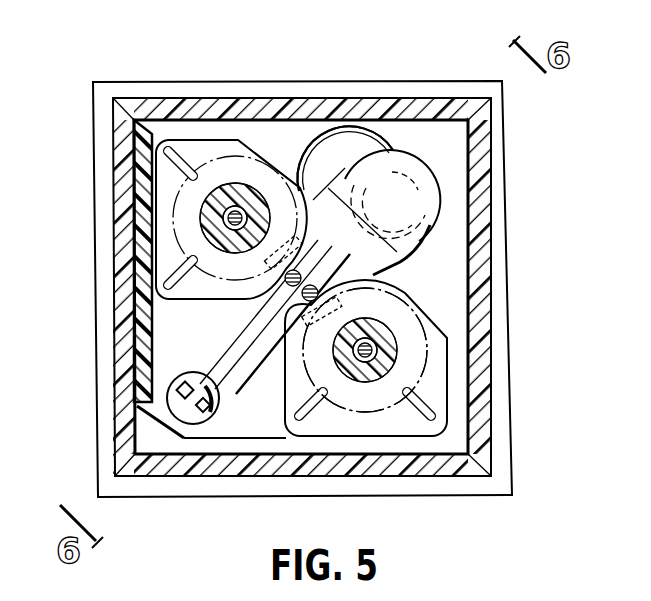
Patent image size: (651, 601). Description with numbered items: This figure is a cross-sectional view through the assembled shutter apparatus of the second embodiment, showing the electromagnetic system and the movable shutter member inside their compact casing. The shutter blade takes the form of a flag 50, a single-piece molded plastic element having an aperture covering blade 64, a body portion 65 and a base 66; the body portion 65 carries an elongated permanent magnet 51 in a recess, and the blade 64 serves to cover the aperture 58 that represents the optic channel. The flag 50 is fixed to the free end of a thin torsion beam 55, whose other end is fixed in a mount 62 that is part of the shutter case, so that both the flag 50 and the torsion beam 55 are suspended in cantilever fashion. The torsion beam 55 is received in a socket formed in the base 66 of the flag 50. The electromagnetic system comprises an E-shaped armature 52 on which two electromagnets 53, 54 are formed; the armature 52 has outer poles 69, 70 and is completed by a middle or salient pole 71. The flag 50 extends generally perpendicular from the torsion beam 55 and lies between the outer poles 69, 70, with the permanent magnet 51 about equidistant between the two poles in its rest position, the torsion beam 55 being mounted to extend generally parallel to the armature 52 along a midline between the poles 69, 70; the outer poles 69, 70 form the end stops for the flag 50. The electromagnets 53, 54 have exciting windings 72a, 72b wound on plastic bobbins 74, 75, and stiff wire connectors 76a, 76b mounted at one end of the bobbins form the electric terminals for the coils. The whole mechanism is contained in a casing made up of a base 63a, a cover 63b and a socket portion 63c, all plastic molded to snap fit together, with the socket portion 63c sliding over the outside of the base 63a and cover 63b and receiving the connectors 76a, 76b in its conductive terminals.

The flag 50 is at (450, 197).
The permanent magnet 51 is at (398, 262).
The armature 52 is at (440, 364).
The electromagnet 53 is at (241, 139).
The electromagnet 54 is at (450, 337).
The torsion beam 55 is at (219, 386).
The aperture 58 is at (352, 141).
The mount 62 is at (171, 413).
The base 63a is at (264, 445).
The cover 63b is at (379, 470).
The socket portion 63c is at (452, 488).
The aperture covering blade 64 is at (428, 182).
The body portion 65 is at (262, 296).
The base 66 is at (192, 372).
The outer pole 69 is at (257, 192).
The outer pole 70 is at (376, 342).
The salient pole 71 is at (275, 317).
The winding 72a is at (244, 165).
The winding 72b is at (365, 350).
The bobbin 74 is at (250, 200).
The bobbin 75 is at (357, 378).
The wire connector 76a is at (188, 158).
The wire connector 76b is at (172, 276).